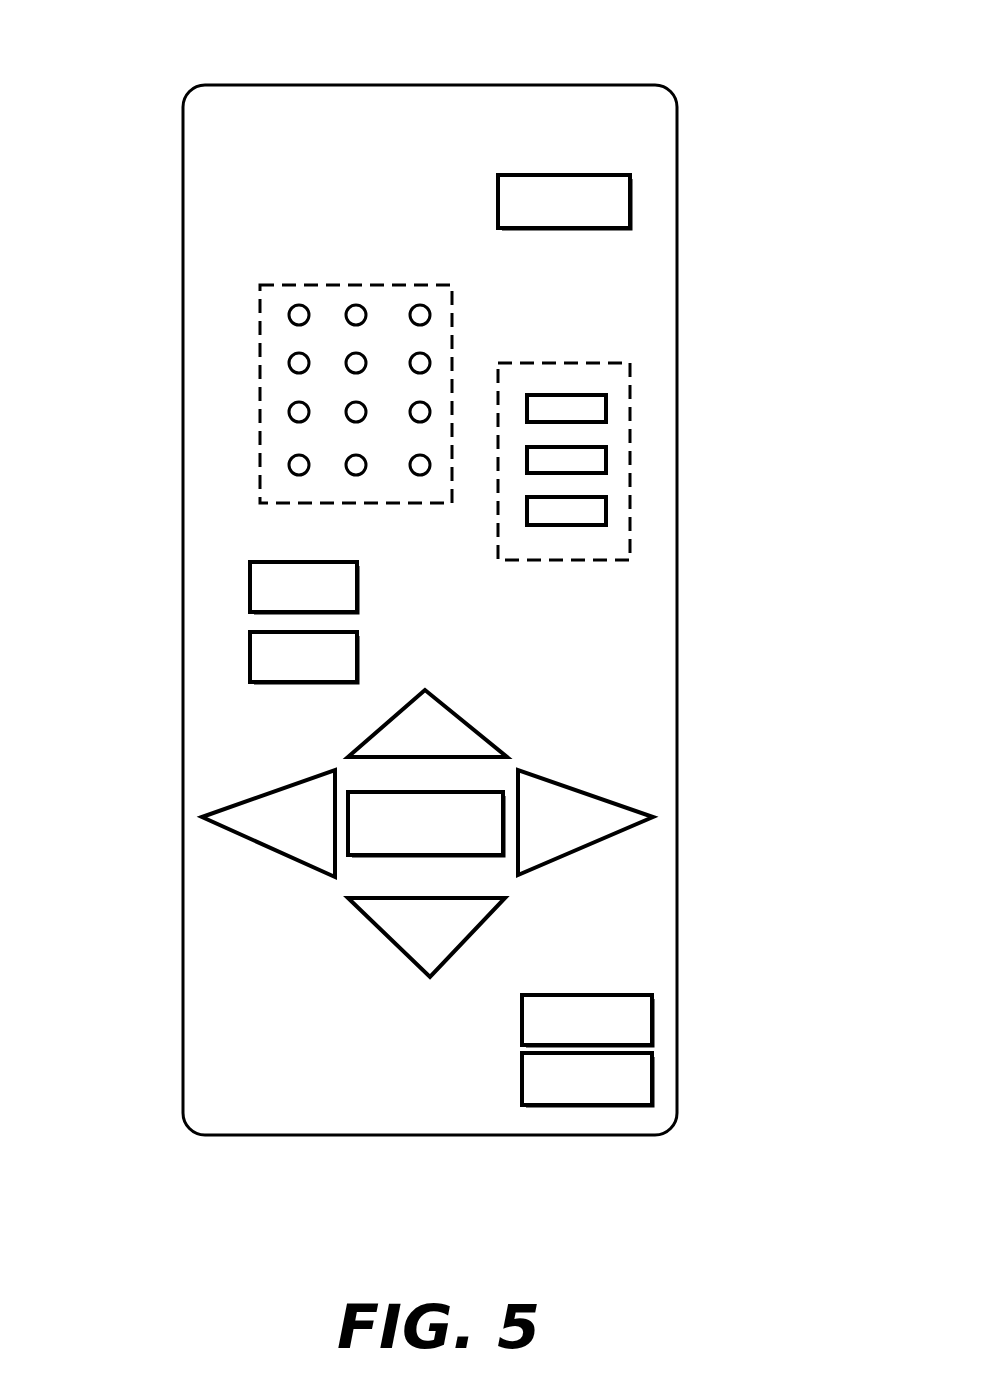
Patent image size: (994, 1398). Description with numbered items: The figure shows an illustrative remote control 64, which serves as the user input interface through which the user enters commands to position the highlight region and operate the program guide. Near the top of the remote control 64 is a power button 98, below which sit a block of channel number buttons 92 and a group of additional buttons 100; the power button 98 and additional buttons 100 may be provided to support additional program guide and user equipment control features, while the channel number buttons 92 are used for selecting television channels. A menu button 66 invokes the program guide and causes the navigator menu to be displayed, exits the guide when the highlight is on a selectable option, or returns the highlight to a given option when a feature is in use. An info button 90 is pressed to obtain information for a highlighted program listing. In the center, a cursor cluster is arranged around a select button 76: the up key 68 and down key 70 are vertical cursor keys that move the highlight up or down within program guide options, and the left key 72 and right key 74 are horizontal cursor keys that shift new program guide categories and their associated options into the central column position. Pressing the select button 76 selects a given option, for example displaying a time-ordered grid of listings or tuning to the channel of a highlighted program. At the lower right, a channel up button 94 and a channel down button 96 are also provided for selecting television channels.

The remote control 64 is at (430, 41).
The power button 98 is at (630, 195).
The channel number buttons 92 is at (248, 381).
The additional buttons 100 is at (630, 445).
The menu button 66 is at (250, 586).
The info button 90 is at (250, 658).
The up key 68 is at (468, 720).
The select button 76 is at (487, 791).
The left key 72 is at (247, 802).
The right key 74 is at (632, 803).
The down key 70 is at (470, 937).
The channel up button 94 is at (652, 1021).
The channel down button 96 is at (652, 1078).